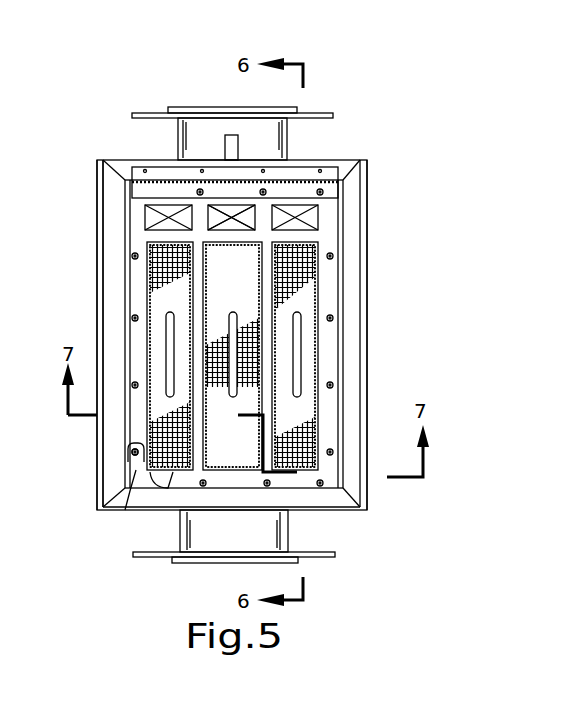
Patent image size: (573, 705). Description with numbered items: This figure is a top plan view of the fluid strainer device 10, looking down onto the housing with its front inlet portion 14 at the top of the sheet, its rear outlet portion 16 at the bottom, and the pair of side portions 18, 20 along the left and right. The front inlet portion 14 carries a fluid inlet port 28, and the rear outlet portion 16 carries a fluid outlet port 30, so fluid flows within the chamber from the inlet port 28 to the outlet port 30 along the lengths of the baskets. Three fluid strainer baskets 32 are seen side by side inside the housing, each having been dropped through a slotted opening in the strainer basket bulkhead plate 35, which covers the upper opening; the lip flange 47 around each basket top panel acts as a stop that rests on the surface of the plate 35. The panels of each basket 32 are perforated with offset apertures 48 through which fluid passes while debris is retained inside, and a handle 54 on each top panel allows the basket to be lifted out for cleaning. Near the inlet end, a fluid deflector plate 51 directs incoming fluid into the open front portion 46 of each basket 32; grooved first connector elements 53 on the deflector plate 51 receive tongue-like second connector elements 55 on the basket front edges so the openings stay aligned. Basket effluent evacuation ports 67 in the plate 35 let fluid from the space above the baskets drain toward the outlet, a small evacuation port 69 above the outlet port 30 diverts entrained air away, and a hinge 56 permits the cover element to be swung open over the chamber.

The strainer device 10 is at (90, 163).
The front inlet portion 14 is at (355, 509).
The rear outlet portion 16 is at (127, 162).
The side portion 18 is at (97, 383).
The side portion 20 is at (367, 352).
The fluid inlet port 28 is at (147, 558).
The fluid outlet port 30 is at (148, 109).
The fluid strainer basket 32 is at (163, 298).
The strainer basket bulkhead plate 35 is at (303, 237).
The open front portion 46 is at (170, 473).
The lip flange 47 is at (335, 243).
The apertures 48 is at (163, 297).
The fluid deflector plate 51 is at (138, 466).
The first connector element 53 is at (133, 446).
The handle 54 is at (170, 342).
The second connector element 55 is at (130, 478).
The hinge 56 is at (190, 180).
The basket effluent evacuation port 67 is at (247, 212).
The evacuation port 69 is at (237, 140).